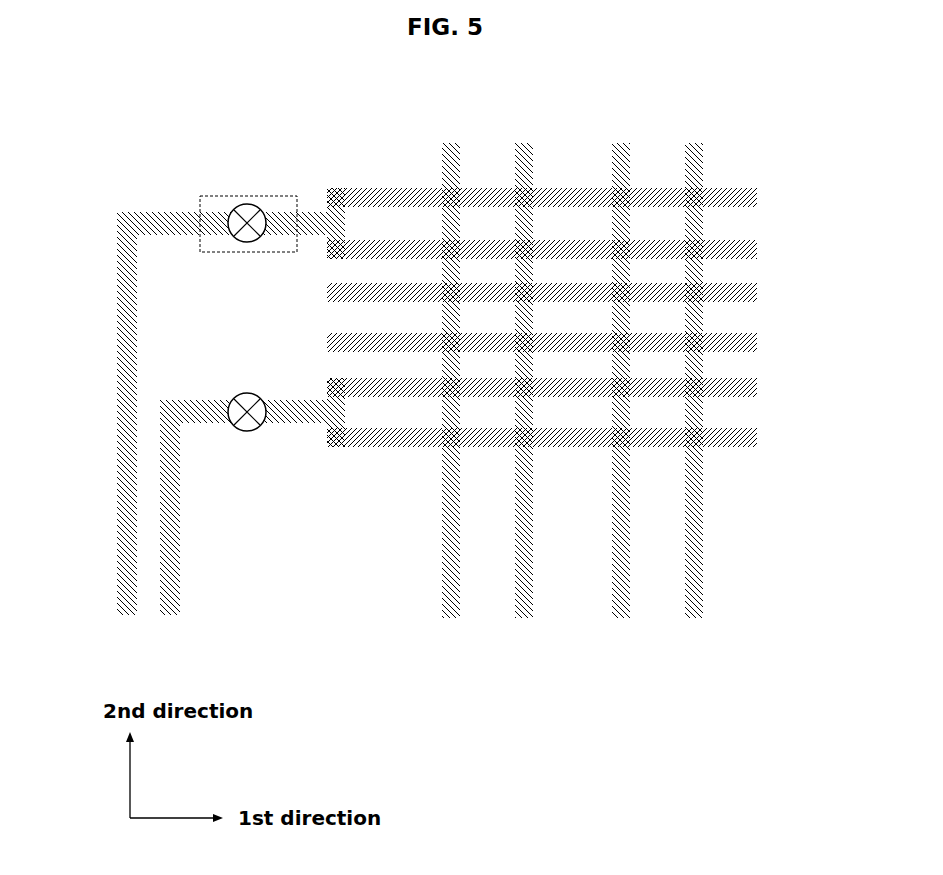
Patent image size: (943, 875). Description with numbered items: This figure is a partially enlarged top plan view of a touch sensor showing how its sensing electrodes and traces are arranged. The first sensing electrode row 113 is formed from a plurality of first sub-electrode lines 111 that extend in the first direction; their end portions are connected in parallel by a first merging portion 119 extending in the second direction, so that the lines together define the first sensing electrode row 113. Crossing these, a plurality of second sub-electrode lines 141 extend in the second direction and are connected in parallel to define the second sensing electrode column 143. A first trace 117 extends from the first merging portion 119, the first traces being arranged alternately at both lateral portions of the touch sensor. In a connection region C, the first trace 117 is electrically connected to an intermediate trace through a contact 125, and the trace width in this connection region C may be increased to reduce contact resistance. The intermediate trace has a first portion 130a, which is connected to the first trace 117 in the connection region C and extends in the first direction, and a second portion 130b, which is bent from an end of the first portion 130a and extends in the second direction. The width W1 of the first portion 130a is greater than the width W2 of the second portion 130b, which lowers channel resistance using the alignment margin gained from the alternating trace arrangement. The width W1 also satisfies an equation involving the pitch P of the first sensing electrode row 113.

The first sub-electrode line 111 is at (541, 288).
The first sensing electrode row 113 is at (757, 195).
The first merging portion 119 is at (336, 228).
The second sub-electrode line 141 is at (703, 520).
The second sensing electrode column 143 is at (606, 353).
The first portion 130a is at (166, 210).
The second portion 130b is at (120, 478).
The contact 125 is at (250, 253).
The connection region C is at (252, 195).
The first trace 117 is at (290, 425).
The width of the first portion W1 is at (117, 235).
The width of the second portion W2 is at (117, 616).
The pitch of the first sensing electrode row P is at (757, 259).